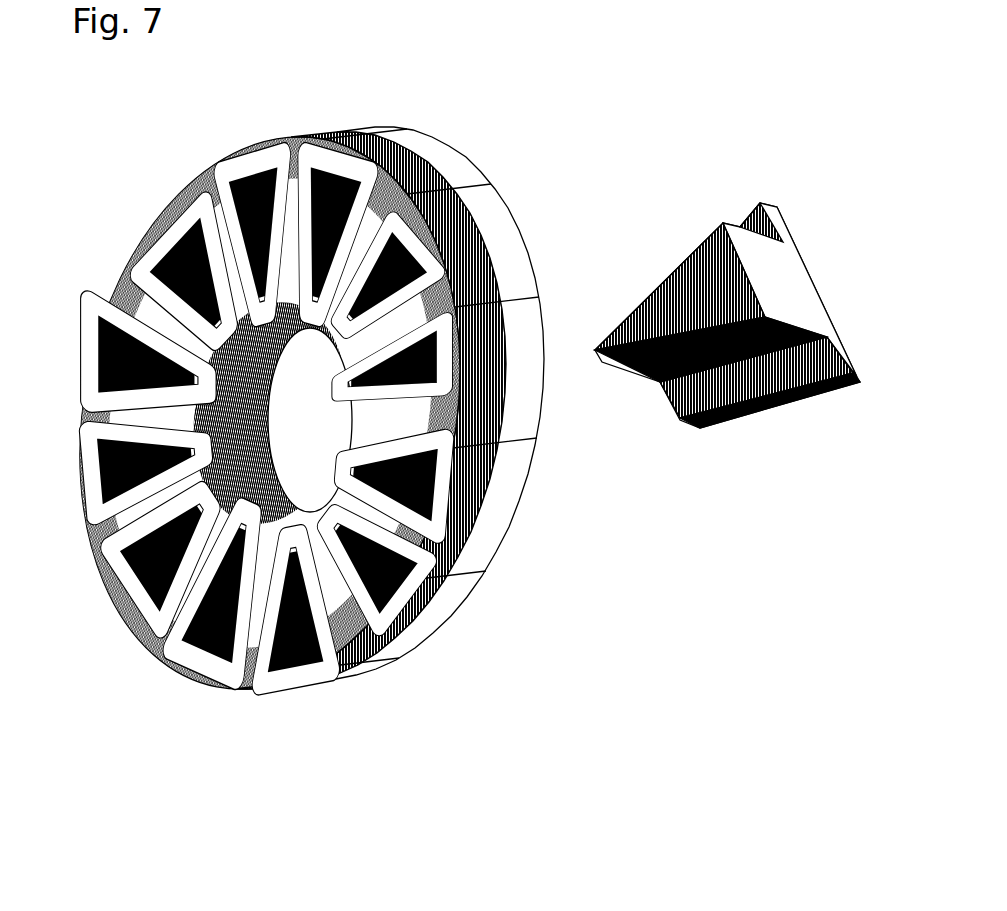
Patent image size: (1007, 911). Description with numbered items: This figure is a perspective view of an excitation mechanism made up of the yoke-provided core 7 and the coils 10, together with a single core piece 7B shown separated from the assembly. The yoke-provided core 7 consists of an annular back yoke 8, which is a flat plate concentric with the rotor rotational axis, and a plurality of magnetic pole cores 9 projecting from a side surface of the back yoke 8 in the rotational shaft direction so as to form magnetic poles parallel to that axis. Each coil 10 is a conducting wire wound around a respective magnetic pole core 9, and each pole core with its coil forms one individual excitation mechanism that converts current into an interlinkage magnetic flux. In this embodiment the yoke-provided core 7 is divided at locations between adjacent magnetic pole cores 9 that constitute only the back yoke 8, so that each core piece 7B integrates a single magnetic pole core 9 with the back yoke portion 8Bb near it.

The yoke-provided core 7 is at (446, 411).
The core piece 7B is at (569, 411).
The back yoke 8 is at (546, 411).
The back yoke portion 8Bb is at (760, 203).
The magnetic pole core 9 is at (330, 175).
The coil 10 is at (160, 232).